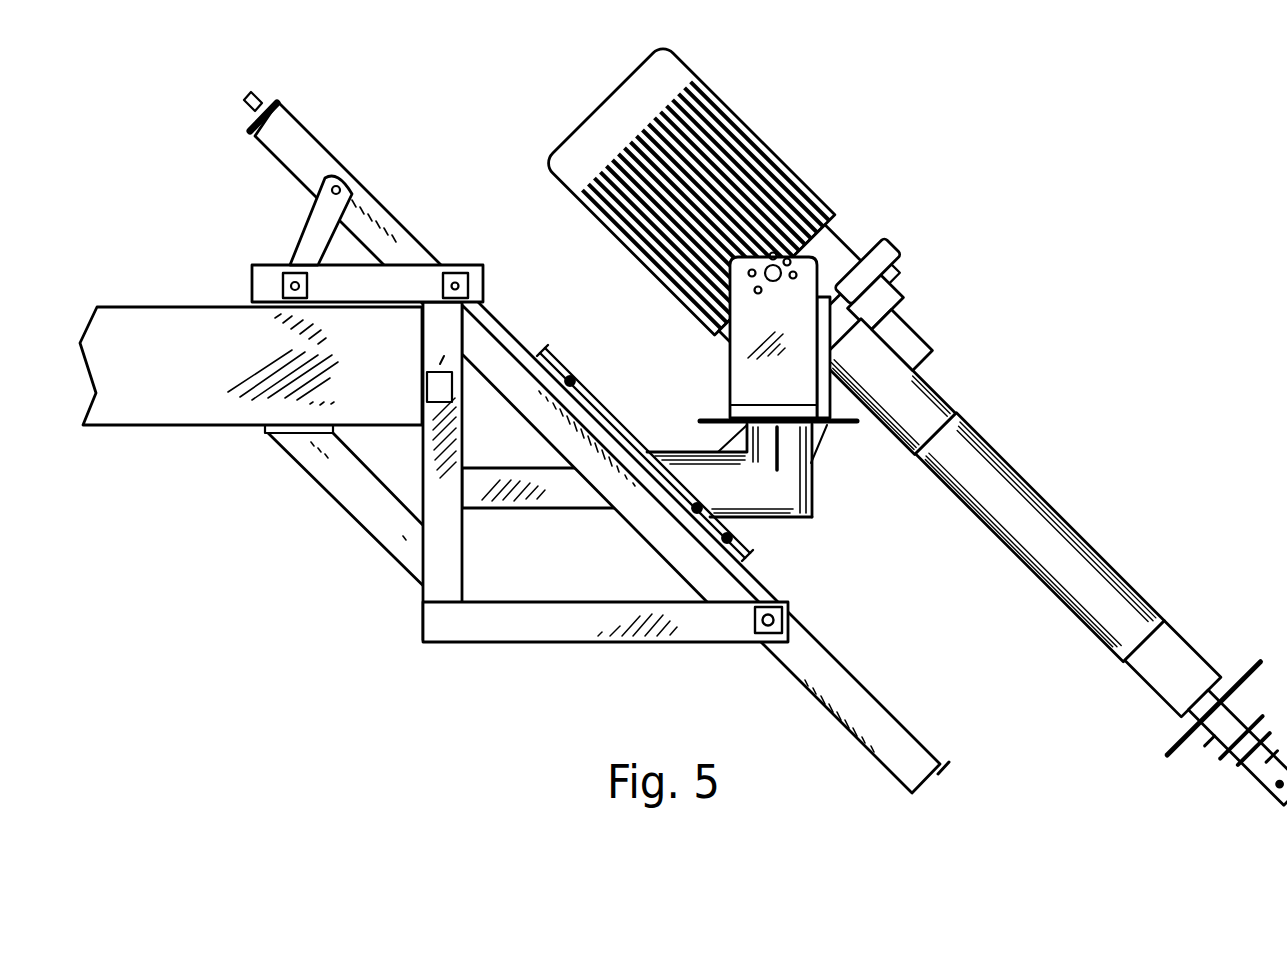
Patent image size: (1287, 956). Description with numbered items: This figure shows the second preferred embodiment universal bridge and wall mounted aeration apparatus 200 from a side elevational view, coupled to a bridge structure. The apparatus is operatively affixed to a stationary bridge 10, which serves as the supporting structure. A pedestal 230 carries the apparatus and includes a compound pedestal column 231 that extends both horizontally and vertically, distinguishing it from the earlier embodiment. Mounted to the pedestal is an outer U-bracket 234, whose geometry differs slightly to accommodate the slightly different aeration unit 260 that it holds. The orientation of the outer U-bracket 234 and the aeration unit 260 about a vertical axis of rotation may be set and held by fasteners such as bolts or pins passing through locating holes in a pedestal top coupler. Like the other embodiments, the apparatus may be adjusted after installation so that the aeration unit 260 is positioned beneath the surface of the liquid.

The stationary bridge 10 is at (180, 380).
The second preferred embodiment universal bridge and wall mounted aeration apparatus 200 is at (995, 168).
The pedestal 230 is at (786, 498).
The compound pedestal column 231 is at (813, 503).
The outer U-bracket 234 is at (798, 396).
The aeration unit 260 is at (1013, 461).